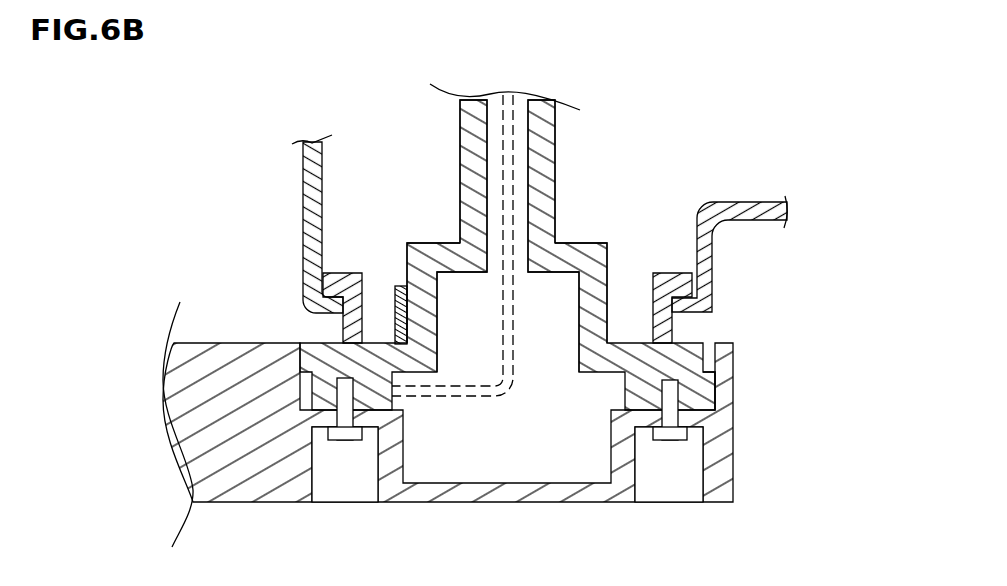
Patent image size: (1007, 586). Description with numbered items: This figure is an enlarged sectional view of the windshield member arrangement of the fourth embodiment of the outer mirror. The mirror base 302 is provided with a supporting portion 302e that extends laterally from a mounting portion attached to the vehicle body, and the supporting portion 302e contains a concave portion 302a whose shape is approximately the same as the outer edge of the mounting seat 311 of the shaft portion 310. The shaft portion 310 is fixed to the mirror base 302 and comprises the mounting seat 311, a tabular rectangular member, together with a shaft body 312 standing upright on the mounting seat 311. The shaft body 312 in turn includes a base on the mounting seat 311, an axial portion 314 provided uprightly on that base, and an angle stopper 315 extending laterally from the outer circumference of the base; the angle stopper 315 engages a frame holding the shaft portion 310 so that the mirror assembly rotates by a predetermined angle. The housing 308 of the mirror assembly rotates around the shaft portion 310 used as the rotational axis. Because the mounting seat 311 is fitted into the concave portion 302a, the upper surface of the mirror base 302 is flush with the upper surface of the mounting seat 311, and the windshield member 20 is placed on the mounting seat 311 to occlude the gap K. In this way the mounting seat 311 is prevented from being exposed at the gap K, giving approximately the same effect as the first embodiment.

The mirror base 302 is at (510, 424).
The concave portion 302a is at (712, 389).
The supporting portion 302e is at (733, 427).
The housing 308 is at (303, 176).
The shaft portion 310 is at (563, 240).
The mounting seat 311 is at (563, 247).
The shaft body 312 is at (581, 241).
The axial portion 314 is at (553, 122).
The angle stopper 315 is at (398, 285).
The windshield member 20 is at (660, 273).
The gap K is at (312, 323).